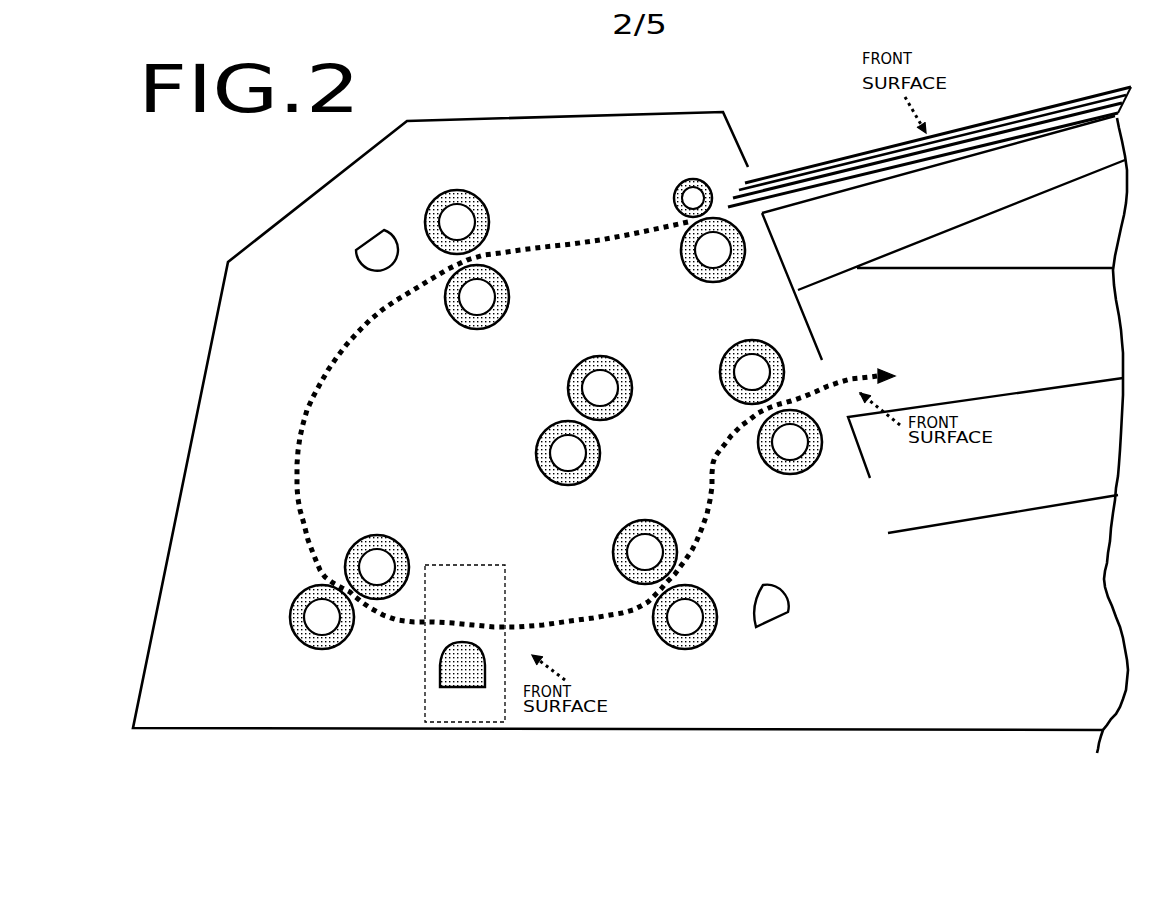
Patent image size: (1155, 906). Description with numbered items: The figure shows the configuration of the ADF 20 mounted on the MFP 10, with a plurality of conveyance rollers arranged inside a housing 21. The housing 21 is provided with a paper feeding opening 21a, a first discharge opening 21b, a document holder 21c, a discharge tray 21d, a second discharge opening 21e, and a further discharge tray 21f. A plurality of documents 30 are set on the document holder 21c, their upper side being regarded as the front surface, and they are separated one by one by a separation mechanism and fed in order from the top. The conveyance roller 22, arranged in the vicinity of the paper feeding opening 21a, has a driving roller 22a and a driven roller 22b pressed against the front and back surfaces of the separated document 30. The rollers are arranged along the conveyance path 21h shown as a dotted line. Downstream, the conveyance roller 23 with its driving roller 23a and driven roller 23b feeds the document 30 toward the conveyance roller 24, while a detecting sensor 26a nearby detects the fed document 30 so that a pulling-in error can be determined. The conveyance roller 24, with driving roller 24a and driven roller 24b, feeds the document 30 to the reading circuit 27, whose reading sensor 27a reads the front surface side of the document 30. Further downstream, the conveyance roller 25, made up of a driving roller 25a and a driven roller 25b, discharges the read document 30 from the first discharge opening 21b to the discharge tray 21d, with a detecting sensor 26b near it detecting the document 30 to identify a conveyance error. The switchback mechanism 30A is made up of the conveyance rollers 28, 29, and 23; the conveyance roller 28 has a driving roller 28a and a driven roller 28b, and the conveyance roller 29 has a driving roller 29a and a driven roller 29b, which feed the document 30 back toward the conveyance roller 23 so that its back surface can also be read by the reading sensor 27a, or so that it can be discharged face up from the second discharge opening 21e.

The MFP 10 is at (725, 87).
The ADF 20 is at (590, 136).
The housing 21 is at (467, 118).
The paper feeding opening 21a is at (769, 156).
The first discharge opening 21b is at (897, 493).
The document holder 21c is at (1033, 187).
The discharge tray 21d is at (1058, 512).
The second discharge opening 21e is at (852, 354).
The discharge tray 21f is at (1028, 394).
The conveyance path 21h is at (555, 612).
The conveyance roller 22 is at (675, 234).
The driving roller 22a is at (679, 189).
The driven roller 22b is at (690, 280).
The conveyance roller 23 is at (485, 239).
The driving roller 23a is at (522, 268).
The driven roller 23b is at (485, 195).
The conveyance roller 24 is at (343, 594).
The driving roller 24a is at (321, 652).
The driven roller 24b is at (401, 536).
The conveyance roller 25 is at (688, 583).
The driving roller 25a is at (672, 651).
The driven roller 25b is at (667, 518).
The detecting sensor 26a is at (368, 227).
The detecting sensor 26b is at (781, 590).
The reading circuit 27 is at (434, 643).
The reading sensor 27a is at (437, 672).
The conveyance roller 28 is at (737, 420).
The driving roller 28a is at (788, 478).
The driven roller 28b is at (752, 339).
The conveyance roller 29 is at (565, 436).
The driving roller 29a is at (538, 470).
The driven roller 29b is at (630, 366).
The document 30 is at (1024, 94).
The switchback mechanism 30A is at (386, 324).